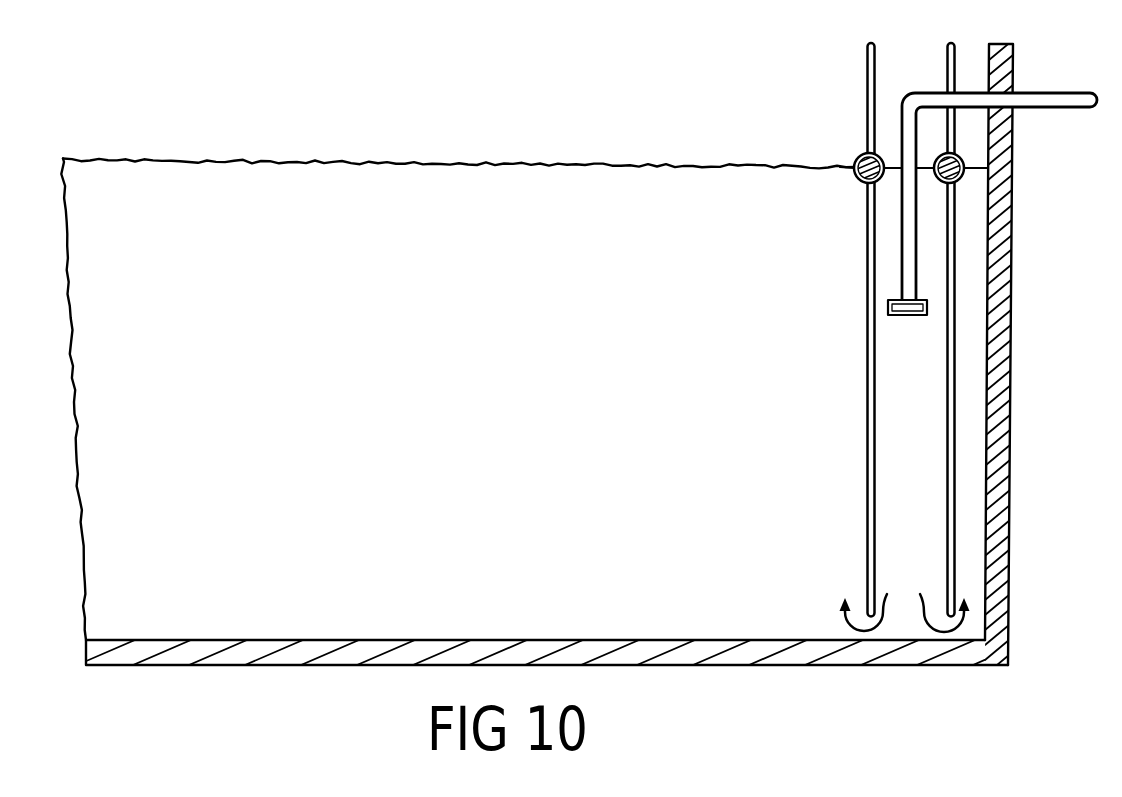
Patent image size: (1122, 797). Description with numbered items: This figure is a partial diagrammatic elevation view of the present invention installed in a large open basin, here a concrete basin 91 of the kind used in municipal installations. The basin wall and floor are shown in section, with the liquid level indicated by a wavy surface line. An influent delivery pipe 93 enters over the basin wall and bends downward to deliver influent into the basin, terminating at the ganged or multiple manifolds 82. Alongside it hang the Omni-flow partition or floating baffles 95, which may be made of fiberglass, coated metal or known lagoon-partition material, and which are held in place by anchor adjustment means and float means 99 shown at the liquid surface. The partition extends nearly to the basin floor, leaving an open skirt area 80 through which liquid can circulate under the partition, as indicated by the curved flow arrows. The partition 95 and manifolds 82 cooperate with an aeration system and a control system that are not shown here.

The open skirt area 80 is at (905, 601).
The ganged or multiple manifolds 82 is at (898, 317).
The concrete basin 91 is at (1000, 455).
The influent delivery pipe 93 is at (1055, 103).
The Omni-flow partition or floating baffles 95 is at (865, 428).
The anchor adjustment means and float means 99 is at (858, 154).